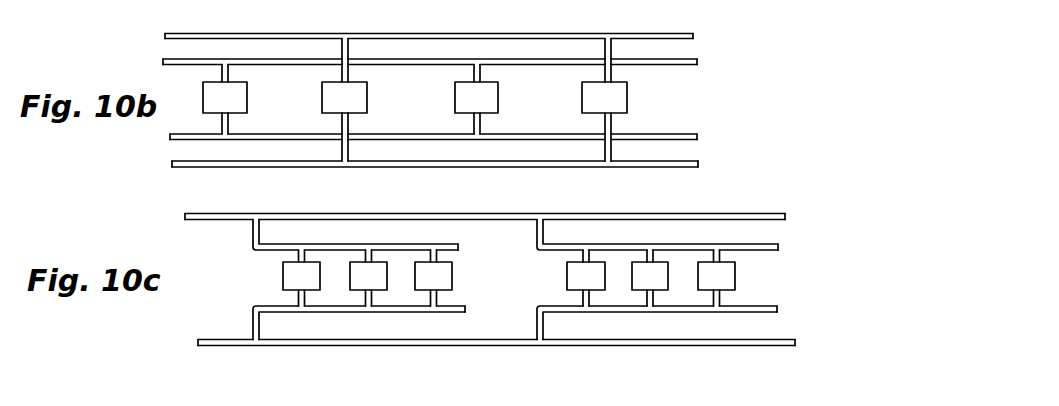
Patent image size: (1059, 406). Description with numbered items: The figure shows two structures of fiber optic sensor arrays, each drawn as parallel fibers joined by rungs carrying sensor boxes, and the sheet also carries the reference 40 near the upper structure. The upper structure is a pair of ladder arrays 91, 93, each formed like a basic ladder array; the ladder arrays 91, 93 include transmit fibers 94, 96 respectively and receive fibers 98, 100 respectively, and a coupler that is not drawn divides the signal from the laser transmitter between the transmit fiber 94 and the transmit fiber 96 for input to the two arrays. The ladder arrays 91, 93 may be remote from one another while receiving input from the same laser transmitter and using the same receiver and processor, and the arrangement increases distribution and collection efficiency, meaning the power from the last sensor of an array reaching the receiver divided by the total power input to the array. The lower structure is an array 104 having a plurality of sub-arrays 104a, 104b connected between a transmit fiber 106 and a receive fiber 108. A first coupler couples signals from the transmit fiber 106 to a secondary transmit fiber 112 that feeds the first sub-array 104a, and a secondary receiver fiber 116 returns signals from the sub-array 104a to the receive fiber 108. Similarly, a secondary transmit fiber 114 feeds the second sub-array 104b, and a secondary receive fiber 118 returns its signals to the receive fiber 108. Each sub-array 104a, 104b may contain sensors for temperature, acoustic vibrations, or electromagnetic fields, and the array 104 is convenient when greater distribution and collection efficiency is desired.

In FIG. 10B, the sensor cable assembly 40 is at (311, 0).
In FIG. 10B, the ladder array 91 is at (702, 27).
In FIG. 10B, the ladder array 93 is at (704, 62).
In FIG. 10B, the transmit fiber 94 is at (226, 34).
In FIG. 10B, the transmit fiber 96 is at (165, 59).
In FIG. 10B, the receive fiber 98 is at (200, 168).
In FIG. 10B, the receive fiber 100 is at (183, 142).
In FIG. 10C, the receive fiber 100 is at (255, 213).
In FIG. 10C, the array 104 is at (536, 202).
In FIG. 10C, the first sub-array 104a is at (460, 277).
In FIG. 10C, the second sub-array 104b is at (760, 292).
In FIG. 10C, the transmit fiber 106 is at (440, 213).
In FIG. 10C, the receive fiber 108 is at (483, 337).
In FIG. 10C, the secondary transmit fiber 112 is at (252, 243).
In FIG. 10C, the secondary transmit fiber 114 is at (538, 236).
In FIG. 10C, the secondary receiver fiber 116 is at (397, 312).
In FIG. 10C, the secondary receive fiber 118 is at (577, 313).